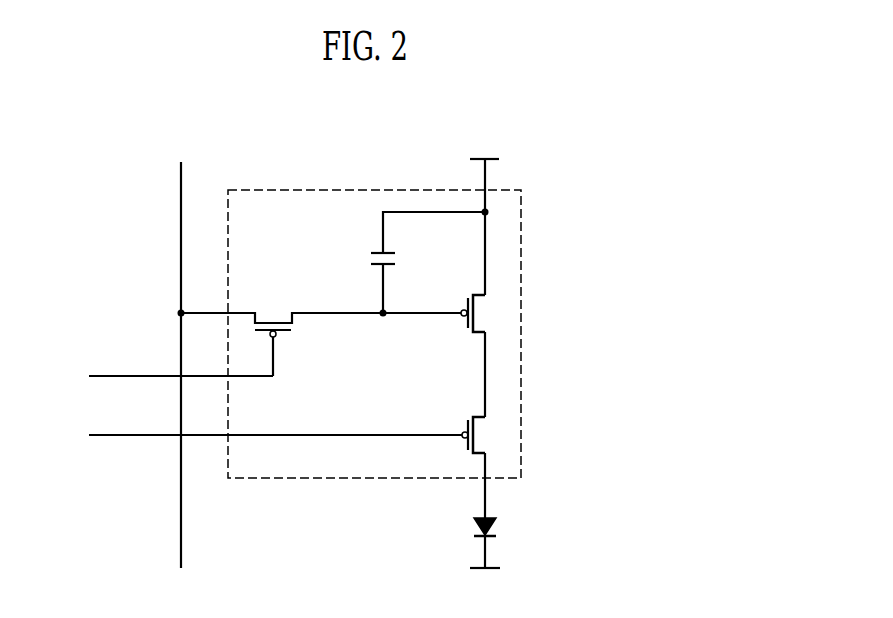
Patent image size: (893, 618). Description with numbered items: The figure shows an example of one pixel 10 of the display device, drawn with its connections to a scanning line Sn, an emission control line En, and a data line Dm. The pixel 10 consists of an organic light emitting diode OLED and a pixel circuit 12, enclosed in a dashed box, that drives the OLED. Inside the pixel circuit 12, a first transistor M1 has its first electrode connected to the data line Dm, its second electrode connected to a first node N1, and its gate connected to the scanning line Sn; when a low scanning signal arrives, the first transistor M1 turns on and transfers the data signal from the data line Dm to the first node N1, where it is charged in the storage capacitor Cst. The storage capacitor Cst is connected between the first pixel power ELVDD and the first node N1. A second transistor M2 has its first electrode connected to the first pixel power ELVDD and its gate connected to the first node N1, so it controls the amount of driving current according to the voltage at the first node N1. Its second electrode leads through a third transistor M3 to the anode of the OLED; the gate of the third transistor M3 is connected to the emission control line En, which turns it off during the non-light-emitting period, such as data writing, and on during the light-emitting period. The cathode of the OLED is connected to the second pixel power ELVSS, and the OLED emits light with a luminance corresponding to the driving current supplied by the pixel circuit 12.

The pixel 10 is at (550, 143).
The pixel circuit 12 is at (522, 337).
The data line Dm is at (181, 350).
The scanning line Sn is at (167, 382).
The emission control line En is at (262, 437).
The first transistor M1 is at (281, 334).
The second transistor M2 is at (485, 356).
The third transistor M3 is at (485, 467).
The storage capacitor Cst is at (412, 262).
The first node N1 is at (416, 329).
The organic light emitting diode OLED is at (508, 543).
The first pixel power ELVDD is at (484, 213).
The second pixel power ELVSS is at (483, 584).